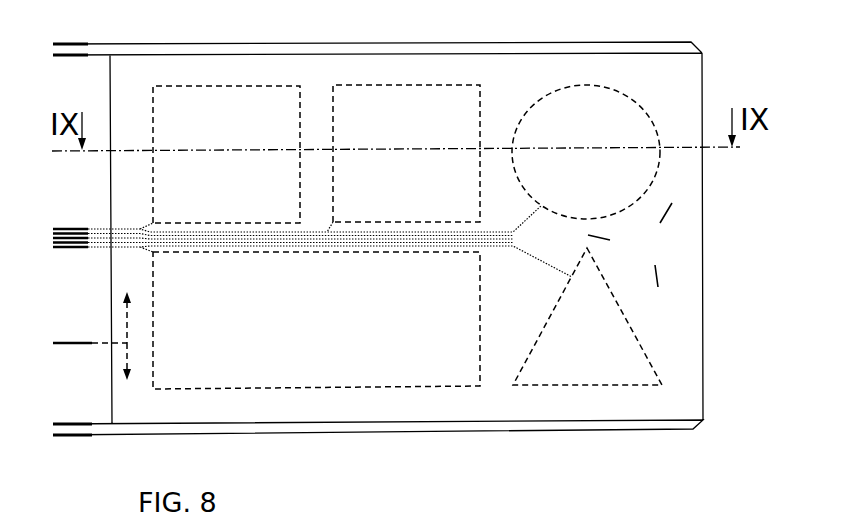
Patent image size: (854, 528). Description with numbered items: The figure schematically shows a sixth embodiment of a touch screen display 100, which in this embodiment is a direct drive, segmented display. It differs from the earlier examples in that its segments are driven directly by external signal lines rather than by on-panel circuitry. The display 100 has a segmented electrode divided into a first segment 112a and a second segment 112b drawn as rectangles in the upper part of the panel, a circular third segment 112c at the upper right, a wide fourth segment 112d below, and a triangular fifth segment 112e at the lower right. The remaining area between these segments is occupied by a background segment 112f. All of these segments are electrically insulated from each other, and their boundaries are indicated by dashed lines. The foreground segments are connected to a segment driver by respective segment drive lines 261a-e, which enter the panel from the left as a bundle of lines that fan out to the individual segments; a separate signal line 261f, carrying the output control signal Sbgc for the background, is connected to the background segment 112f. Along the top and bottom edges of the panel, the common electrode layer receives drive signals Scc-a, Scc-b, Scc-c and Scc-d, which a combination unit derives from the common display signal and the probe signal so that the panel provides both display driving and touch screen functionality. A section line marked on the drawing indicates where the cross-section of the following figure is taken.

The display 100 is at (802, 198).
The segment 112a is at (226, 154).
The segment 112b is at (403, 158).
The segment 112c is at (586, 152).
The segment 112d is at (316, 320).
The segment 112e is at (587, 316).
The background segment 112f is at (630, 245).
The segment drive lines 261a-e is at (302, 245).
The signal line 261f is at (84, 336).
The drive signal Scc-a is at (71, 73).
The drive signal Scc-b is at (75, 405).
The drive signal Scc-c is at (75, 449).
The drive signal Scc-d is at (71, 31).